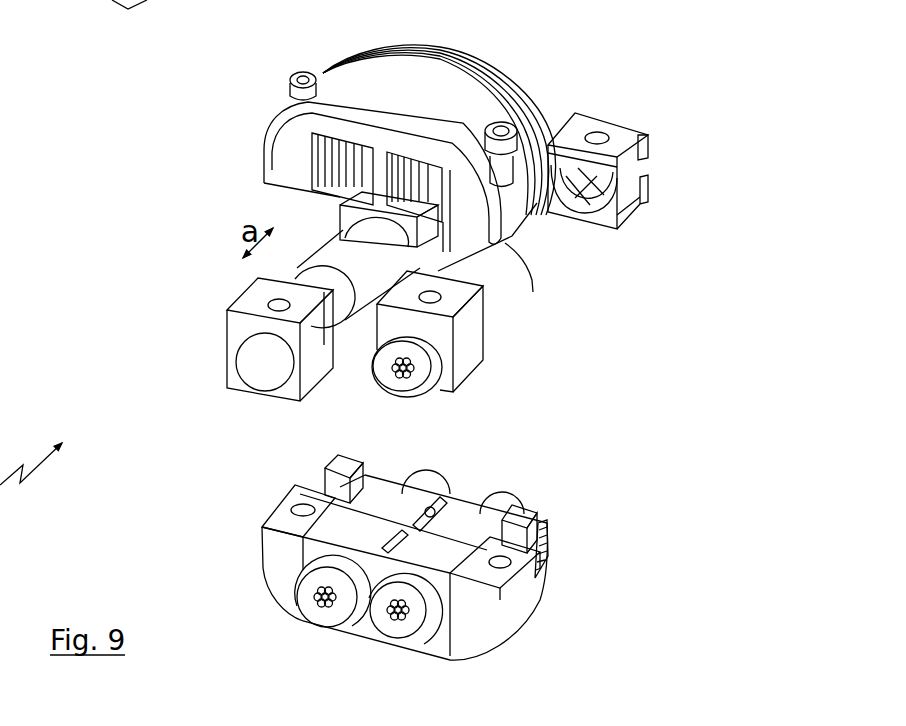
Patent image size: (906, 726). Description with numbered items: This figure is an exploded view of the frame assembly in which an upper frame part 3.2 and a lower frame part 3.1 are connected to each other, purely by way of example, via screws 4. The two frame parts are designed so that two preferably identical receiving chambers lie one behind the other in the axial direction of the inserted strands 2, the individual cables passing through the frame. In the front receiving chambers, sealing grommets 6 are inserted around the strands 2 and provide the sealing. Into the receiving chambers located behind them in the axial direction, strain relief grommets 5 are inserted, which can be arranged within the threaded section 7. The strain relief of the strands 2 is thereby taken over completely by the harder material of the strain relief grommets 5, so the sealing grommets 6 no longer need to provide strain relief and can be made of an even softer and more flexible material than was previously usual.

The strands 2 is at (495, 295).
The lower frame part 3.1 is at (480, 627).
The upper frame part 3.2 is at (282, 140).
The screws 4 is at (496, 125).
The strain relief grommets 5 is at (613, 140).
The sealing grommets 6 is at (233, 377).
The threaded section 7 is at (548, 540).